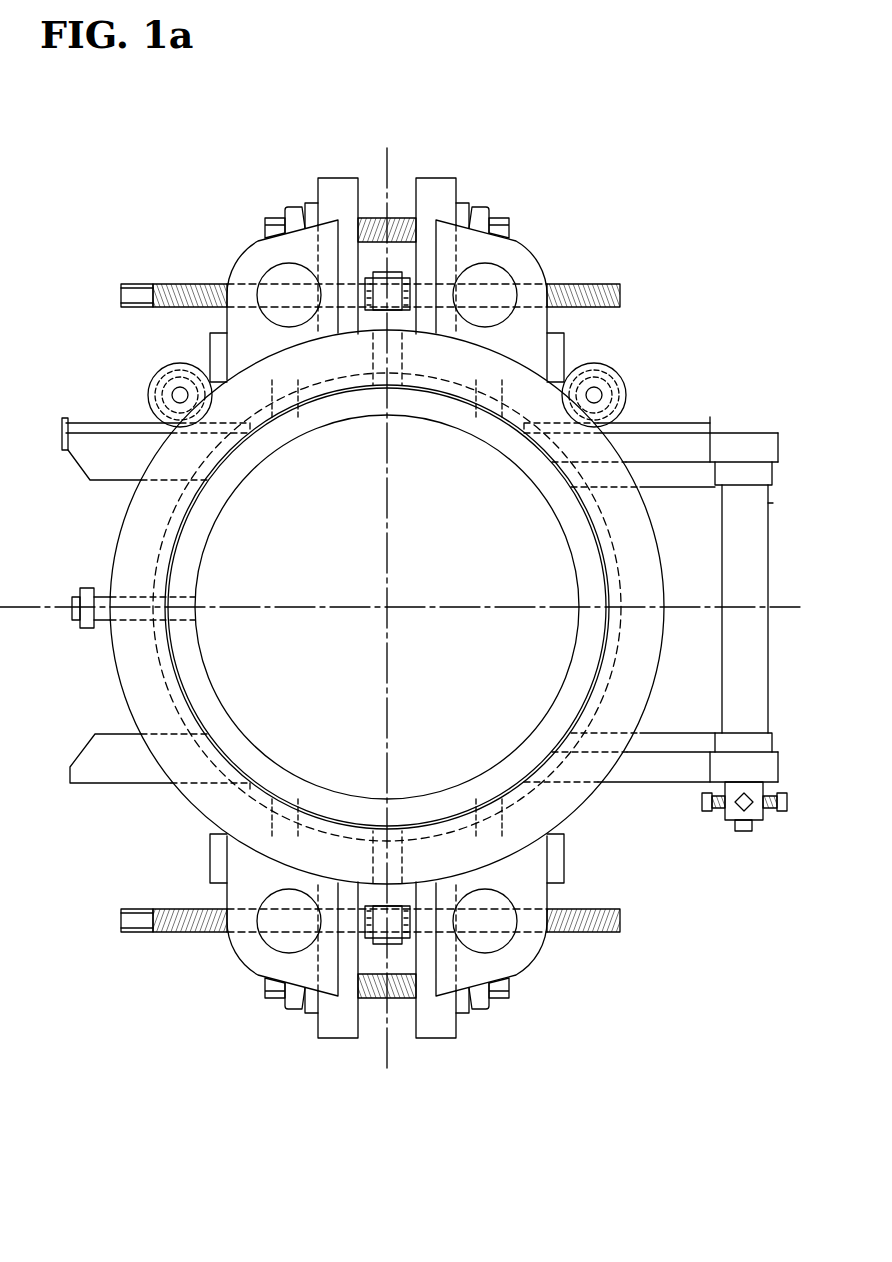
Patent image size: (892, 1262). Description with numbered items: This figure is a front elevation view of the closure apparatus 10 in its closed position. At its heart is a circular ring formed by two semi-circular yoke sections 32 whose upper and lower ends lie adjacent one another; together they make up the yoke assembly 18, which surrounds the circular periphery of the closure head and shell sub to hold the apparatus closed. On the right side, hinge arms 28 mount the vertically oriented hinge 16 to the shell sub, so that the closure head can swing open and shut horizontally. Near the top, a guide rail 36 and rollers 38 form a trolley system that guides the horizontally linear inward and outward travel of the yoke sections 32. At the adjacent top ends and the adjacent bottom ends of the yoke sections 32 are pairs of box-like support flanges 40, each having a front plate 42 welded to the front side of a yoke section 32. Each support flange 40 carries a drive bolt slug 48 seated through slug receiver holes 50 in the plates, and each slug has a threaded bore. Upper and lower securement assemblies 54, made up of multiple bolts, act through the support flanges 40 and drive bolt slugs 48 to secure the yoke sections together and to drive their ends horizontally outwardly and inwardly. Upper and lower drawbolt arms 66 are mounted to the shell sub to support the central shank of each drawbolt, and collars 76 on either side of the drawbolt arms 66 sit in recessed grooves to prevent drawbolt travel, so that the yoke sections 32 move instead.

The closure apparatus 10 is at (641, 122).
The hinge 16 is at (752, 413).
The yoke assembly 18 is at (103, 506).
The hinge arms 28 is at (647, 443).
The yoke sections 32 is at (130, 528).
The guide rail 36 is at (85, 418).
The rollers 38 is at (163, 372).
The support flanges 40 is at (275, 218).
The front plate 42 is at (470, 243).
The drive bolt slug 48 is at (265, 262).
The slug receiver holes 50 is at (283, 290).
The securement assemblies 54 is at (228, 263).
The drawbolt arms 66 is at (393, 272).
The collars 76 is at (366, 276).